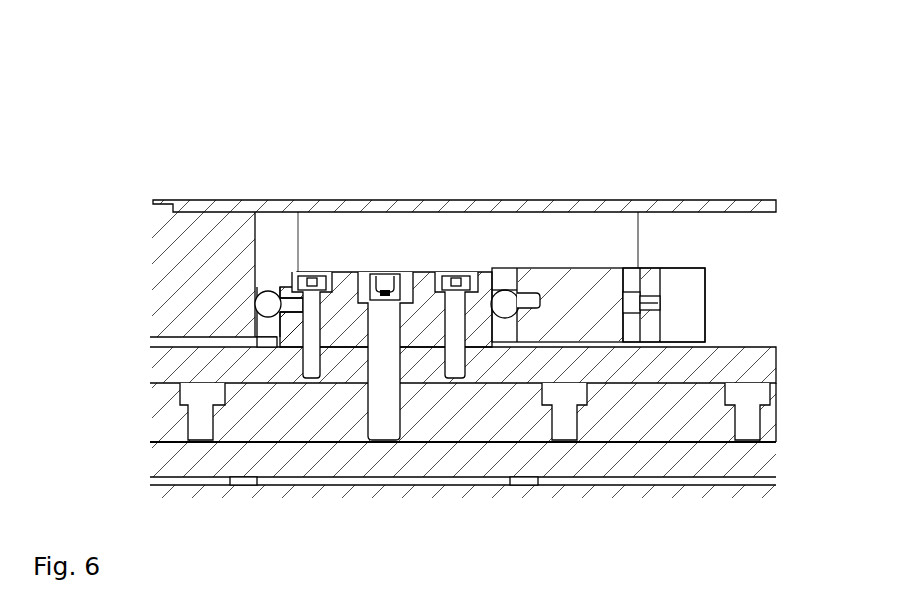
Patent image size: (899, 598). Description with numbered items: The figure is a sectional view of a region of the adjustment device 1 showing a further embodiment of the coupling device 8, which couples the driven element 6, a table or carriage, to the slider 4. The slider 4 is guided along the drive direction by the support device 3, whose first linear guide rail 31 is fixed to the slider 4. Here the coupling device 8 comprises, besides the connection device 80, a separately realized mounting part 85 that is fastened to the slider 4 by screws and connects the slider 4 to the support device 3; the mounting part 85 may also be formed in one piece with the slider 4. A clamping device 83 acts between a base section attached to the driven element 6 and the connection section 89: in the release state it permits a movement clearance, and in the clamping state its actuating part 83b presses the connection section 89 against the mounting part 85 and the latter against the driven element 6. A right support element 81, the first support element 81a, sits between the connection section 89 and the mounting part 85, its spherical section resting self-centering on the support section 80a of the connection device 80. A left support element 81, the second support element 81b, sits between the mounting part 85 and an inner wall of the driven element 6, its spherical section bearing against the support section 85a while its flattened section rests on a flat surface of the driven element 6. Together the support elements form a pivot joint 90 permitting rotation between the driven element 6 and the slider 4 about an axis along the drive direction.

The adjustment device 1 is at (161, 100).
The support device 3 is at (672, 415).
The slider 4 is at (695, 357).
The driven element 6 is at (195, 265).
The coupling device 8 is at (471, 237).
The first linear guide rail 31 is at (170, 412).
The connection device 80 is at (578, 300).
The support section 80a is at (522, 287).
The support element 81 is at (266, 298).
The first support element 81a is at (507, 290).
The second support element 81b is at (283, 290).
The clamping device 83 is at (662, 292).
The actuating part 83b is at (638, 300).
The mounting part 85 is at (343, 285).
The support section 85a is at (286, 324).
The connection section 89 is at (560, 280).
The pivot joint 90 is at (261, 339).